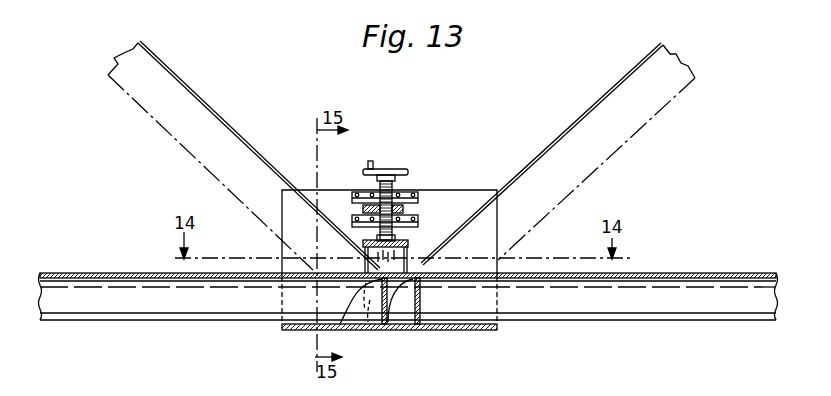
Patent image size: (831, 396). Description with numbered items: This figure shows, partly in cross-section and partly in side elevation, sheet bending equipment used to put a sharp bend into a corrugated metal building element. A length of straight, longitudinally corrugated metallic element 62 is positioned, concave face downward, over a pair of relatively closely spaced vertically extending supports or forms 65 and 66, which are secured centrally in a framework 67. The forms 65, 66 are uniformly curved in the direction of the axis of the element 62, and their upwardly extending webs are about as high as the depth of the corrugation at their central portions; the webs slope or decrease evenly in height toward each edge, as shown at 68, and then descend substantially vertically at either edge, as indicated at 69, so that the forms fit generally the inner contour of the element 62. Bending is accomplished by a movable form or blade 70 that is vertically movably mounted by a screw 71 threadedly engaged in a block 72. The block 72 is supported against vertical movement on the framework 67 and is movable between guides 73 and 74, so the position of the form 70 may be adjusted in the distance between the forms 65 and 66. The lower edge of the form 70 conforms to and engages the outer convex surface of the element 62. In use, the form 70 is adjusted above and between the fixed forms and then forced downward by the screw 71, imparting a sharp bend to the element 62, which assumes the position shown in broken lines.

The metallic element 62 is at (87, 272).
The form 65 is at (366, 318).
The form 66 is at (404, 319).
The framework 67 is at (478, 331).
The sloping web portion 68 is at (357, 304).
The vertical edge portion 69 is at (338, 321).
The movable form 70 is at (408, 255).
The screw 71 is at (393, 182).
The block 72 is at (404, 208).
The guide 73 is at (362, 191).
The guide 74 is at (361, 223).